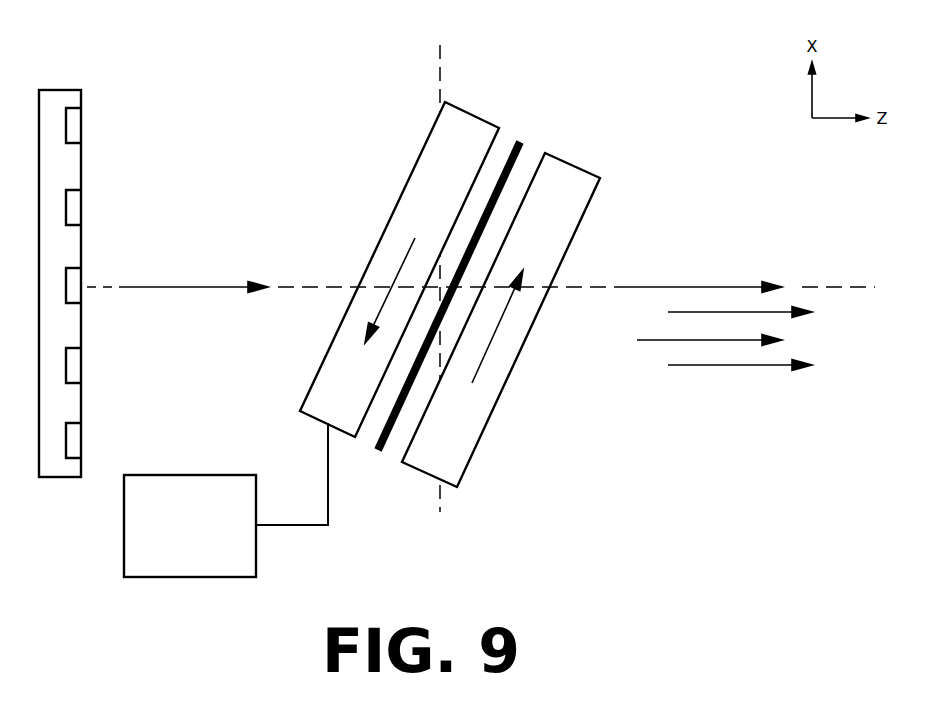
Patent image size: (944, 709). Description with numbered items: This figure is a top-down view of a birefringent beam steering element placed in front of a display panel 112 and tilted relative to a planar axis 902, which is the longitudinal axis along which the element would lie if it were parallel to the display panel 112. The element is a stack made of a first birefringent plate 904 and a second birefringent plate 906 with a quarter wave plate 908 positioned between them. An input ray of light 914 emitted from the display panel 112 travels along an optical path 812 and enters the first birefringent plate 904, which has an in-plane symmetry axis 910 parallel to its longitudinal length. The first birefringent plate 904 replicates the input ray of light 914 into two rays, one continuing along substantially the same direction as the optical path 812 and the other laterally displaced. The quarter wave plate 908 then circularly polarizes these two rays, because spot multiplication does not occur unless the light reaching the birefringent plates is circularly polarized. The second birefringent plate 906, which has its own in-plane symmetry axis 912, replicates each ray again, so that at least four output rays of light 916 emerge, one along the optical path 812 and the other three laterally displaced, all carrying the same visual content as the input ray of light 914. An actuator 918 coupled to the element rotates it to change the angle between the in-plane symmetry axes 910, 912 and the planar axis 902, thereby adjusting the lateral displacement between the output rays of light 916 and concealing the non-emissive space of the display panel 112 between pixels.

The display panel 112 is at (58, 90).
The optical path 812 is at (280, 283).
The planar axis 902 is at (440, 296).
The first birefringent plate 904 is at (418, 155).
The second birefringent plate 906 is at (478, 442).
The quarter wave plate 908 is at (525, 140).
The in-plane symmetry axis 910 is at (392, 280).
The in-plane symmetry axis 912 is at (500, 332).
The input ray of light 914 is at (188, 289).
The output rays of light 916 is at (728, 370).
The actuator 918 is at (226, 500).